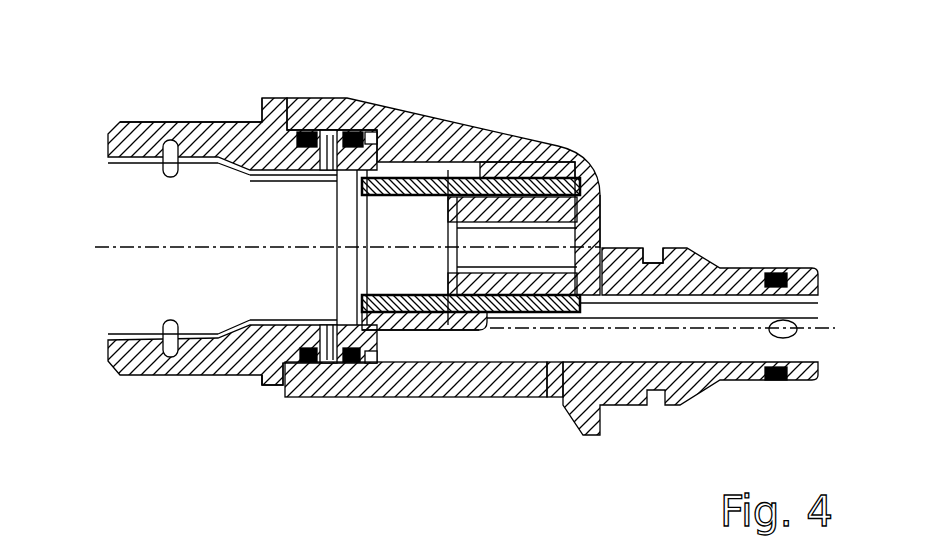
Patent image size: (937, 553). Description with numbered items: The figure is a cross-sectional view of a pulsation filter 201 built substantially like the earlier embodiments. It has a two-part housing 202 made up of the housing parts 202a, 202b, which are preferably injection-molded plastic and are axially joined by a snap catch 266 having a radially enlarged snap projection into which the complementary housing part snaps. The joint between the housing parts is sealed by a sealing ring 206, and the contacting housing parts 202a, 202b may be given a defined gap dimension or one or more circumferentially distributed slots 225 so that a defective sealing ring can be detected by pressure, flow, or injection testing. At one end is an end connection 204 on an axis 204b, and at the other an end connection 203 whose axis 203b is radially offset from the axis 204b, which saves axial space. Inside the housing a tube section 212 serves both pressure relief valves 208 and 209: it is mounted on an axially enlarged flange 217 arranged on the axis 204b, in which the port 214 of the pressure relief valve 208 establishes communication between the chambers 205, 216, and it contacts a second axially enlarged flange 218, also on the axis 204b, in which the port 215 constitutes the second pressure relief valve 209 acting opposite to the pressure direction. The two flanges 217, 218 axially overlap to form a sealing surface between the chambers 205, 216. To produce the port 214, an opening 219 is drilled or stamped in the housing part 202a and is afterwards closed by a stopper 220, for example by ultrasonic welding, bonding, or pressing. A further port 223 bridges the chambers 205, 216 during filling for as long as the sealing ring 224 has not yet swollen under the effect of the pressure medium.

The pulsation filter 201 is at (604, 90).
The two-part housing 202 is at (408, 106).
The housing part 202a is at (583, 221).
The housing part 202b is at (208, 135).
The end connection 203 is at (795, 270).
The axis of end connection 203b is at (830, 330).
The end connection 204 is at (194, 294).
The axis of end connection 204b is at (100, 247).
The chamber 205 is at (705, 347).
The sealing ring 206 is at (305, 364).
The pressure relief valve 208 is at (520, 316).
The second pressure relief valve 209 is at (401, 284).
The tube section 212 is at (469, 180).
The port 214 is at (580, 252).
The port 215 is at (405, 330).
The chamber 216 is at (493, 258).
The axially enlarged flange 217 is at (522, 205).
The axially enlarged flange 218 is at (452, 330).
The opening 219 is at (558, 336).
The stopper 220 is at (560, 405).
The port 223 is at (328, 366).
The sealing ring 224 is at (348, 364).
The slots 225 is at (273, 392).
The snap catch 266 is at (265, 97).